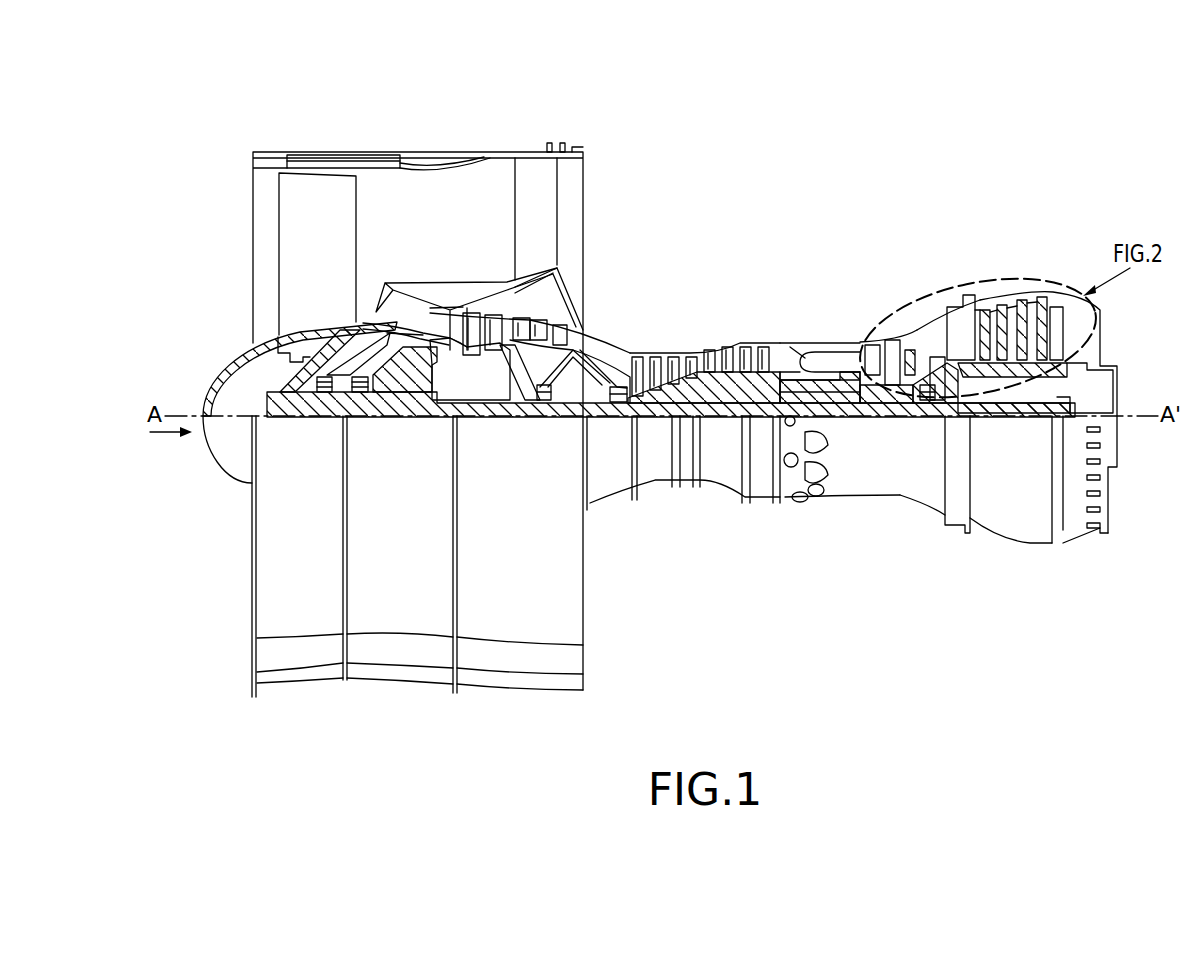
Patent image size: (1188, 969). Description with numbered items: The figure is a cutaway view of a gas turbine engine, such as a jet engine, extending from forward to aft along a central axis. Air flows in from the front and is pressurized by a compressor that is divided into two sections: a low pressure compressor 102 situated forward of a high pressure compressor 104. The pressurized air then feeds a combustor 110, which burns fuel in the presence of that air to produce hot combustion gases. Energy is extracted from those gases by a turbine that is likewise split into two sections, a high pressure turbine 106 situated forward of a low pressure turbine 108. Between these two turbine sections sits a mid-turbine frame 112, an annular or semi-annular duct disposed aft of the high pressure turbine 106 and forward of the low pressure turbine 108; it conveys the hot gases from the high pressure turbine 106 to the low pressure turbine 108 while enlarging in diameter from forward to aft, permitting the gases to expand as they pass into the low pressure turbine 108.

The low pressure compressor 102 is at (583, 137).
The high pressure compressor 104 is at (780, 340).
The combustor 110 is at (859, 340).
The high pressure turbine 106 is at (913, 350).
The mid-turbine frame 112 is at (958, 300).
The low pressure turbine 108 is at (1055, 300).